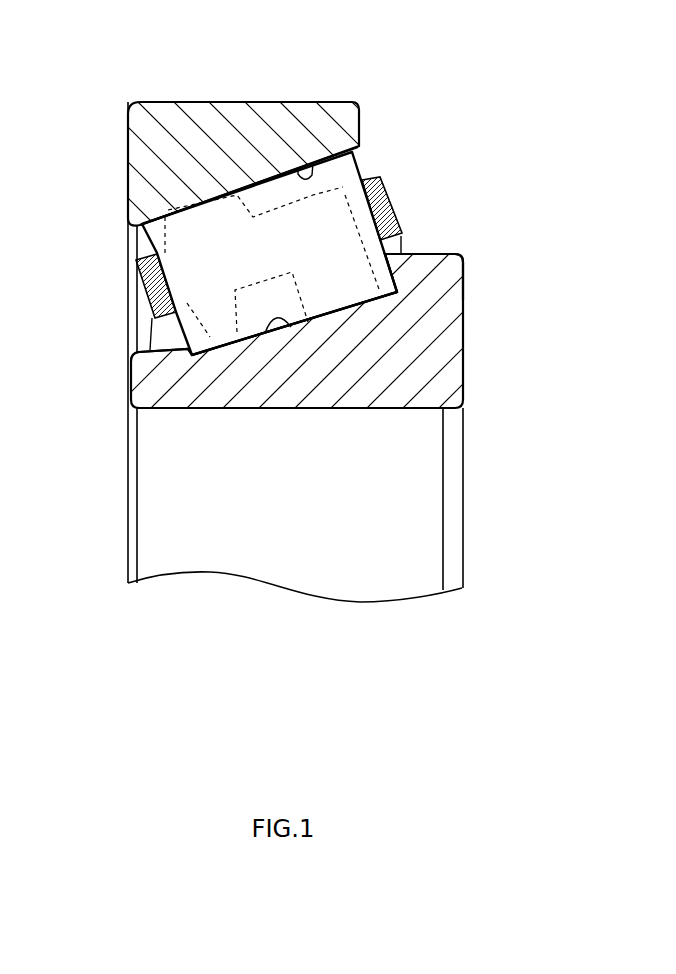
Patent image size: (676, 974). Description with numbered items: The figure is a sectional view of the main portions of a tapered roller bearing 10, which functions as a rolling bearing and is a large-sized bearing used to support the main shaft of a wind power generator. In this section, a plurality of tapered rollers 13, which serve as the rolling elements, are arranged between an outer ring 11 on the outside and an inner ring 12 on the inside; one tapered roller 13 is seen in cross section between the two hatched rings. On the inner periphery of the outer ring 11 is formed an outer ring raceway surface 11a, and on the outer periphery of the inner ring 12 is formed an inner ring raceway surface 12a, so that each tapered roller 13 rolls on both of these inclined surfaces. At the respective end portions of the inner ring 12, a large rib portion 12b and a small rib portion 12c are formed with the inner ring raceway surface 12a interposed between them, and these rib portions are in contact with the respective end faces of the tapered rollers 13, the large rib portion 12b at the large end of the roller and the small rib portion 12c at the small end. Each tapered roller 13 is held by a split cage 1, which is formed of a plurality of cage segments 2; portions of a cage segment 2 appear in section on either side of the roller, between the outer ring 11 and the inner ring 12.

The split cage 1 is at (404, 186).
The cage segment 2 is at (142, 290).
The tapered roller bearing 10 is at (243, 102).
The outer ring 11 is at (180, 112).
The outer ring raceway surface 11a is at (313, 163).
The inner ring 12 is at (369, 390).
The inner ring raceway surface 12a is at (291, 328).
The large rib portion 12b is at (443, 268).
The small rib portion 12c is at (138, 342).
The tapered roller 13 is at (227, 327).